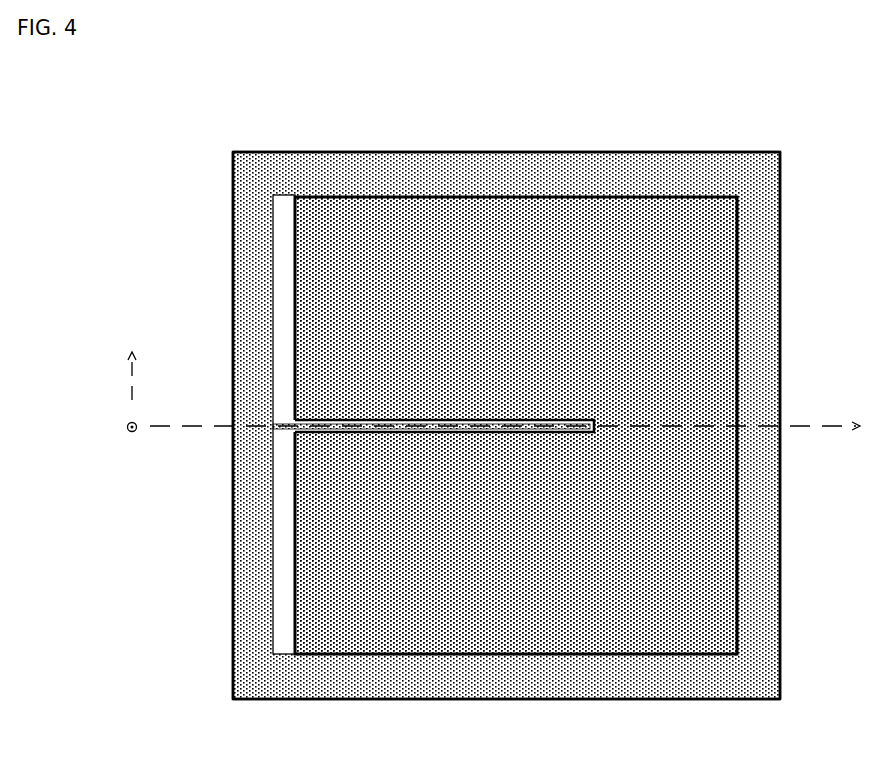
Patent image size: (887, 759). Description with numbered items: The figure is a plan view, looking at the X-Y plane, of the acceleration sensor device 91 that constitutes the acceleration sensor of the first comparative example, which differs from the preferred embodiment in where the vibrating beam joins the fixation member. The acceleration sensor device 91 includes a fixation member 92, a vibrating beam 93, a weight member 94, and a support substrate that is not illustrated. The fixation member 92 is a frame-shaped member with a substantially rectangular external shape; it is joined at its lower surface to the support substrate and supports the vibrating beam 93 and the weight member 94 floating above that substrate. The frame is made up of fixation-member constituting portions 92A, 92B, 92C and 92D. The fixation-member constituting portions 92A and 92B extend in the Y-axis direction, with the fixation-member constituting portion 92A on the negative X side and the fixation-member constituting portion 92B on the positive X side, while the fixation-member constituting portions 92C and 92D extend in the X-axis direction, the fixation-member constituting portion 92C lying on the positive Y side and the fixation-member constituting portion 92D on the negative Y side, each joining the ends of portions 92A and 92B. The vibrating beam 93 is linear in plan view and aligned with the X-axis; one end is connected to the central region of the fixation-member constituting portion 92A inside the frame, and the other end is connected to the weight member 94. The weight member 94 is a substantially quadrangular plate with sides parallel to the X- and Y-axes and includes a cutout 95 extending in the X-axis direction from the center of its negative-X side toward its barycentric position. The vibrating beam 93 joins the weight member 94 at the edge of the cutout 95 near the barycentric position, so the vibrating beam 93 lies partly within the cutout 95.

The acceleration sensor device 91 is at (807, 100).
The fixation member 92 is at (233, 152).
The fixation-member constituting portion 92A is at (233, 266).
The fixation-member constituting portion 92B is at (774, 272).
The fixation-member constituting portion 92C is at (641, 152).
The fixation-member constituting portion 92D is at (650, 702).
The vibrating beam 93 is at (295, 422).
The weight member 94 is at (525, 612).
The cutout 95 is at (292, 437).